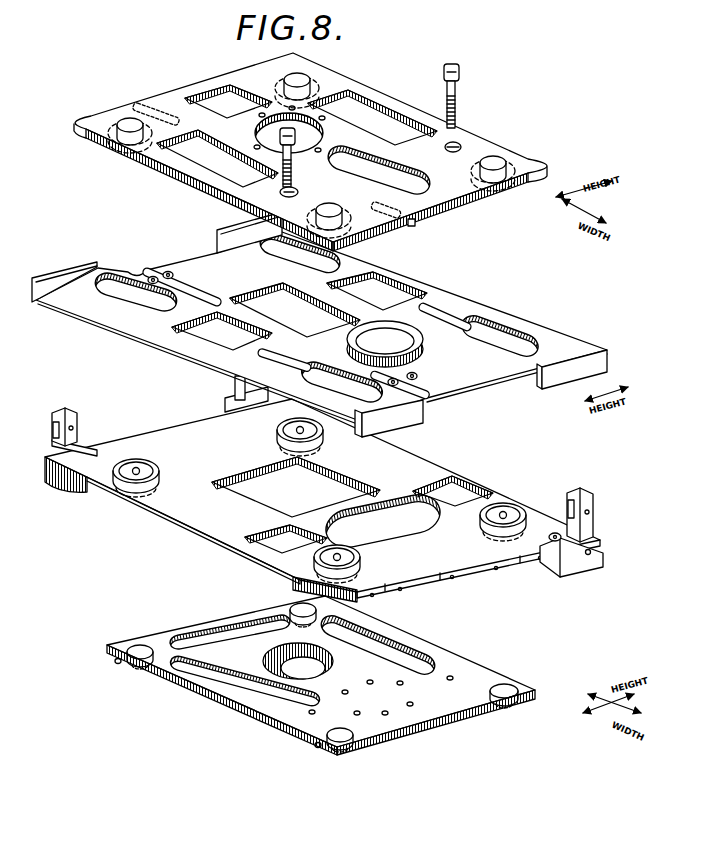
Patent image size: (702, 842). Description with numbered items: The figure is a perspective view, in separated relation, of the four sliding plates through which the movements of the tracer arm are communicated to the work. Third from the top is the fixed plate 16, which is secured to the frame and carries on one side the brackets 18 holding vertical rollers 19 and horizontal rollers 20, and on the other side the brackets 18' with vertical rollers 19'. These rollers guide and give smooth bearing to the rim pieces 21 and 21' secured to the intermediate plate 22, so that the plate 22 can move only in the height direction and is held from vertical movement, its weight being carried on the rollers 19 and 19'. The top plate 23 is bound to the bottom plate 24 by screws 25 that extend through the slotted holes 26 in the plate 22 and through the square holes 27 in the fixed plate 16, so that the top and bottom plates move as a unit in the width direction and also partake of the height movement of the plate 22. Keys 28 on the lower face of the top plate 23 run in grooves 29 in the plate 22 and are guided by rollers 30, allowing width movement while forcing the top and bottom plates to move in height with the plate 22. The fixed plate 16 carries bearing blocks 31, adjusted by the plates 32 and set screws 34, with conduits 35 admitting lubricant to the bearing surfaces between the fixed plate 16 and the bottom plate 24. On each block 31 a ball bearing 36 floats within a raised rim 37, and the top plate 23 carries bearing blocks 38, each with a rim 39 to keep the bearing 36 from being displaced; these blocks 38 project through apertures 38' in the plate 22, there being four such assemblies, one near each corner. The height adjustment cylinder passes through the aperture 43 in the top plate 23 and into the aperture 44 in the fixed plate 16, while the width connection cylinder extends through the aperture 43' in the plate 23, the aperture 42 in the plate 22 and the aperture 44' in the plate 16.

The fixed plate 16 is at (180, 506).
The bracket 18 is at (596, 515).
The bracket 18' is at (160, 414).
The vertical roller 19 is at (552, 514).
The vertical roller 19' is at (30, 433).
The horizontal roller 20 is at (582, 551).
The rim piece 21 is at (497, 390).
The rim piece 21' is at (157, 255).
The intermediate plate 22 is at (452, 301).
The top plate 23 is at (482, 143).
The bottom plate 24 is at (430, 712).
The screw 25 is at (457, 88).
The slotted hole 26 is at (466, 325).
The square hole 27 is at (462, 490).
The key 28 is at (142, 103).
The groove 29 is at (190, 288).
The roller 30 is at (168, 272).
The bearing block 31 is at (115, 484).
The plate 32 is at (318, 608).
The set screw 34 is at (116, 663).
The conduit 35 is at (80, 480).
The ball bearing 36 is at (147, 471).
The raised rim 37 is at (138, 462).
The bearing block 38 is at (308, 155).
The aperture 38' is at (325, 318).
The rim 39 is at (88, 140).
The aperture 42 is at (263, 302).
The aperture 43 is at (393, 173).
The aperture 43' is at (297, 136).
The aperture 44 is at (382, 514).
The aperture 44' is at (296, 483).